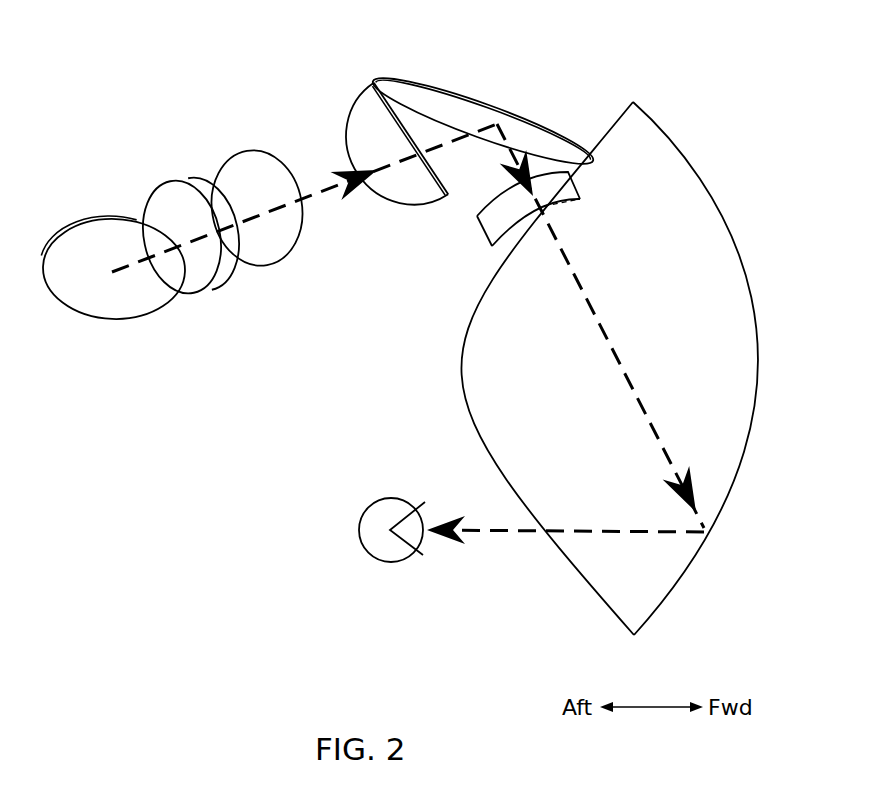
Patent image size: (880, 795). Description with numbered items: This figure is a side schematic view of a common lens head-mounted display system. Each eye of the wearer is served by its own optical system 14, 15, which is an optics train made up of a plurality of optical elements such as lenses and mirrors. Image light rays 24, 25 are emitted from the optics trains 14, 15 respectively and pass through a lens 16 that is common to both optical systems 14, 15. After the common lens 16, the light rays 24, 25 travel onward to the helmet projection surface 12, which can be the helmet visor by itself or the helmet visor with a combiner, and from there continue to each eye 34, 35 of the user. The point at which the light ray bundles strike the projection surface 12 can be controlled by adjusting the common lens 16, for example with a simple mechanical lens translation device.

The helmet projection surface 12 is at (600, 597).
The optical system 14 is at (310, 176).
The optical system 15 is at (449, 36).
The common lens 16 is at (477, 220).
The light rays 24 is at (483, 334).
The light rays 25 is at (633, 386).
The eye 34 is at (345, 504).
The eye 35 is at (370, 520).